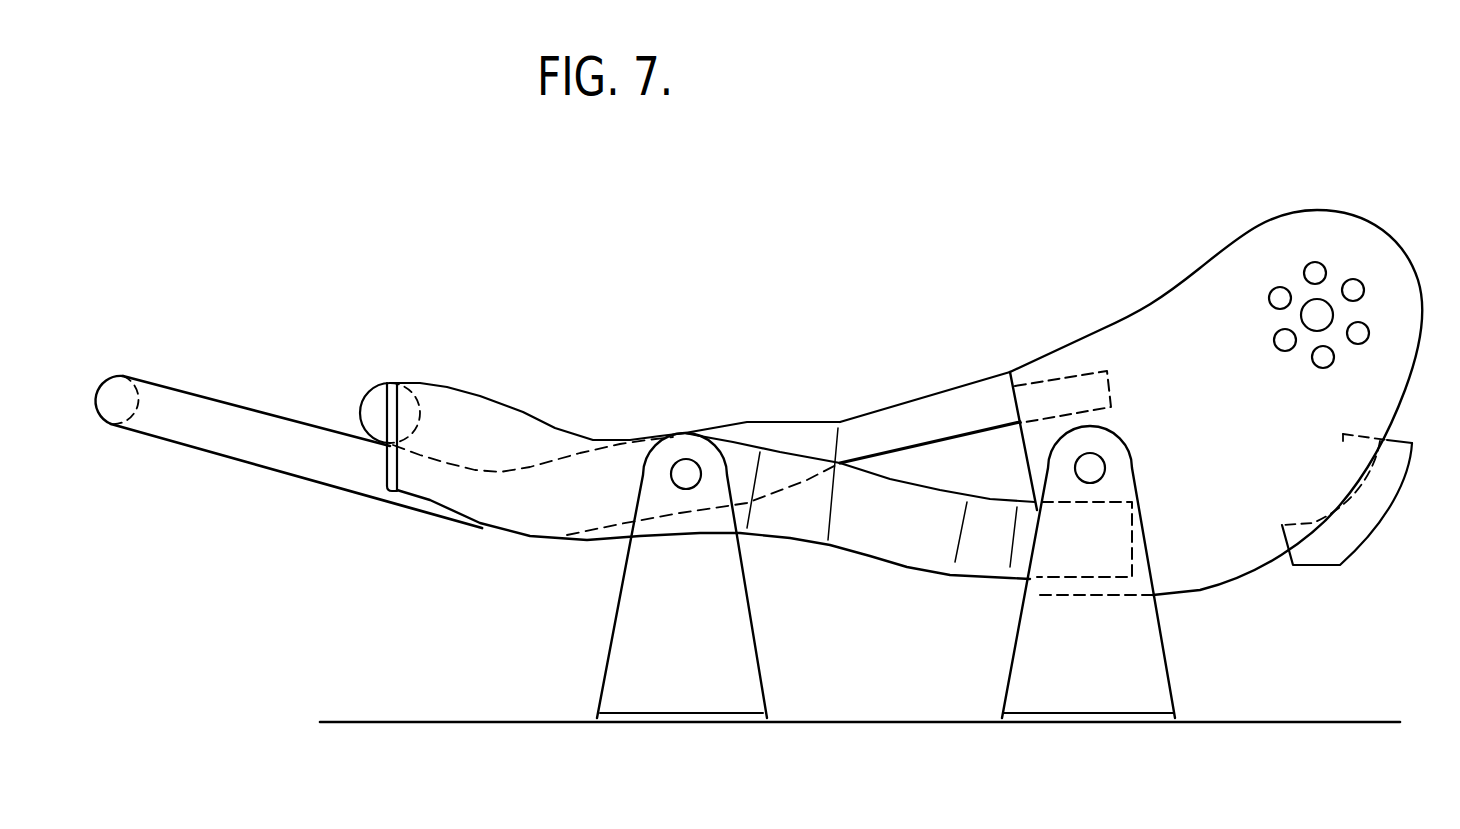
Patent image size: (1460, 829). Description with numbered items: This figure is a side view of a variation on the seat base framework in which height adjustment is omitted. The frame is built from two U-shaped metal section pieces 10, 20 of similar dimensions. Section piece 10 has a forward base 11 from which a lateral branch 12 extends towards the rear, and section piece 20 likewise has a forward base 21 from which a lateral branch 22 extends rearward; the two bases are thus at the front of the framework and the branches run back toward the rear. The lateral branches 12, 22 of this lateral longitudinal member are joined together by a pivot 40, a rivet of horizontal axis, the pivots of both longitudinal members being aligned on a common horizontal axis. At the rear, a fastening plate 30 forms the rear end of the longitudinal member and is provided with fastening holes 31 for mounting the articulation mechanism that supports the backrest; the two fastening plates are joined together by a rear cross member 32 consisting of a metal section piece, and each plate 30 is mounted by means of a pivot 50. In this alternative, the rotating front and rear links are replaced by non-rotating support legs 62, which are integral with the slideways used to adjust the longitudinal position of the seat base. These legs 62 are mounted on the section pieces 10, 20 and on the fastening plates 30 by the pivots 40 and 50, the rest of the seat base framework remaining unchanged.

The metal section piece 10 is at (522, 410).
The base 11 is at (373, 405).
The lateral branch 12 is at (878, 523).
The metal section piece 20 is at (276, 408).
The base 21 is at (120, 394).
The lateral branch 22 is at (915, 437).
The fastening plate 30 is at (1308, 227).
The fastening holes 31 is at (1358, 333).
The rear cross member 32 is at (1363, 505).
The pivot 40 is at (686, 473).
The pivot 50 is at (1088, 462).
The support leg 62 is at (688, 662).